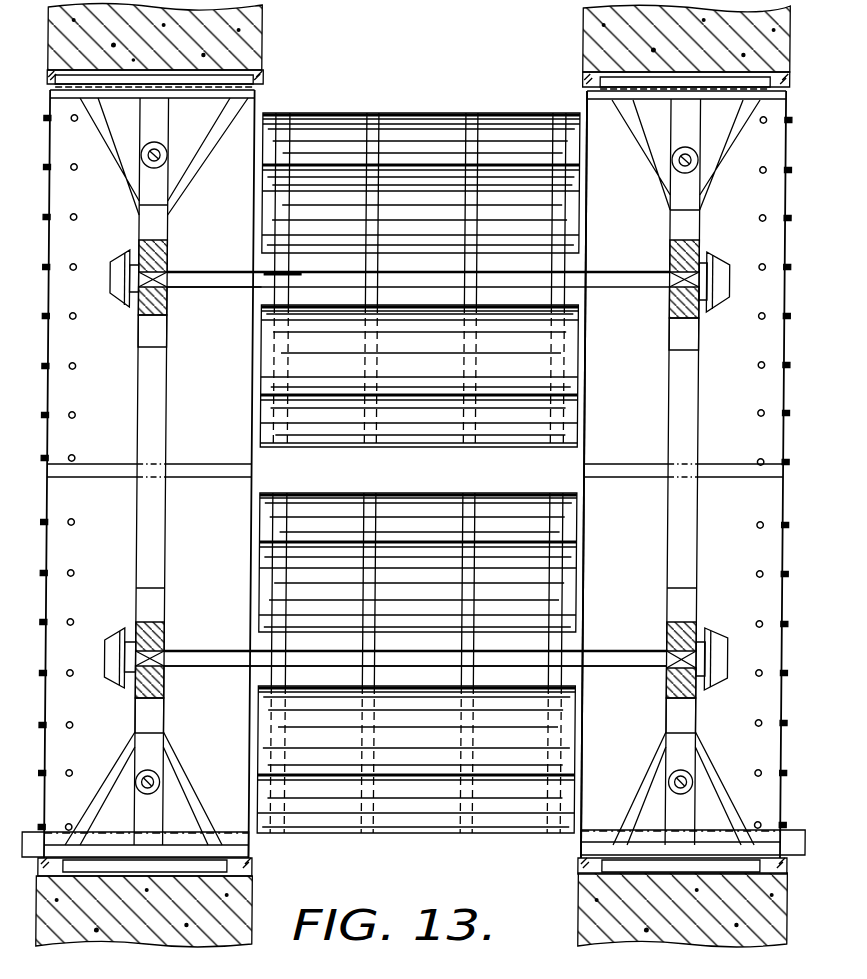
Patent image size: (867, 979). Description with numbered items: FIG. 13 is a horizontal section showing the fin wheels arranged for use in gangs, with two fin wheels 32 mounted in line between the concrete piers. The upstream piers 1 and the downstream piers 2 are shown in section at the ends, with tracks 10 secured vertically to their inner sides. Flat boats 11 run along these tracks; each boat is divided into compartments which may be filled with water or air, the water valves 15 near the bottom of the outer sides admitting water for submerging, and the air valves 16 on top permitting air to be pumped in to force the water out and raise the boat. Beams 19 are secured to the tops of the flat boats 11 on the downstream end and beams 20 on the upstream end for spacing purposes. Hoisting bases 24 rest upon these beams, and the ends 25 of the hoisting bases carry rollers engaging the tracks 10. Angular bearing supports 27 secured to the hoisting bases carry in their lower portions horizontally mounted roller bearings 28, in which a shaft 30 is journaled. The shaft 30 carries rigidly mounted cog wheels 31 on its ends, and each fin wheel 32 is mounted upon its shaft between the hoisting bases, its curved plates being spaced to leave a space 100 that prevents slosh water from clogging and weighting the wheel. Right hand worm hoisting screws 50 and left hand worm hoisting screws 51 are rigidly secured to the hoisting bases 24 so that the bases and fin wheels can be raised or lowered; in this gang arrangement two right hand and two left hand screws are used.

The upstream pier 1 is at (589, 908).
The downstream pier 2 is at (188, 978).
The track 10 is at (255, 80).
The flat boat 11 is at (415, 474).
The water valve 15 is at (44, 528).
The air valve 16 is at (76, 367).
The beam 19 is at (246, 99).
The beam 20 is at (231, 840).
The hoisting base 24 is at (161, 552).
The end of hoisting base 25 is at (105, 100).
The angular bearing support 27 is at (161, 333).
The roller bearing 28 is at (167, 270).
The shaft 30 is at (232, 277).
The cog wheel 31 is at (119, 285).
The fin wheel 32 is at (391, 120).
The right hand worm hoisting screw 50 is at (166, 162).
The left hand worm hoisting screw 51 is at (678, 162).
The space 100 is at (284, 651).